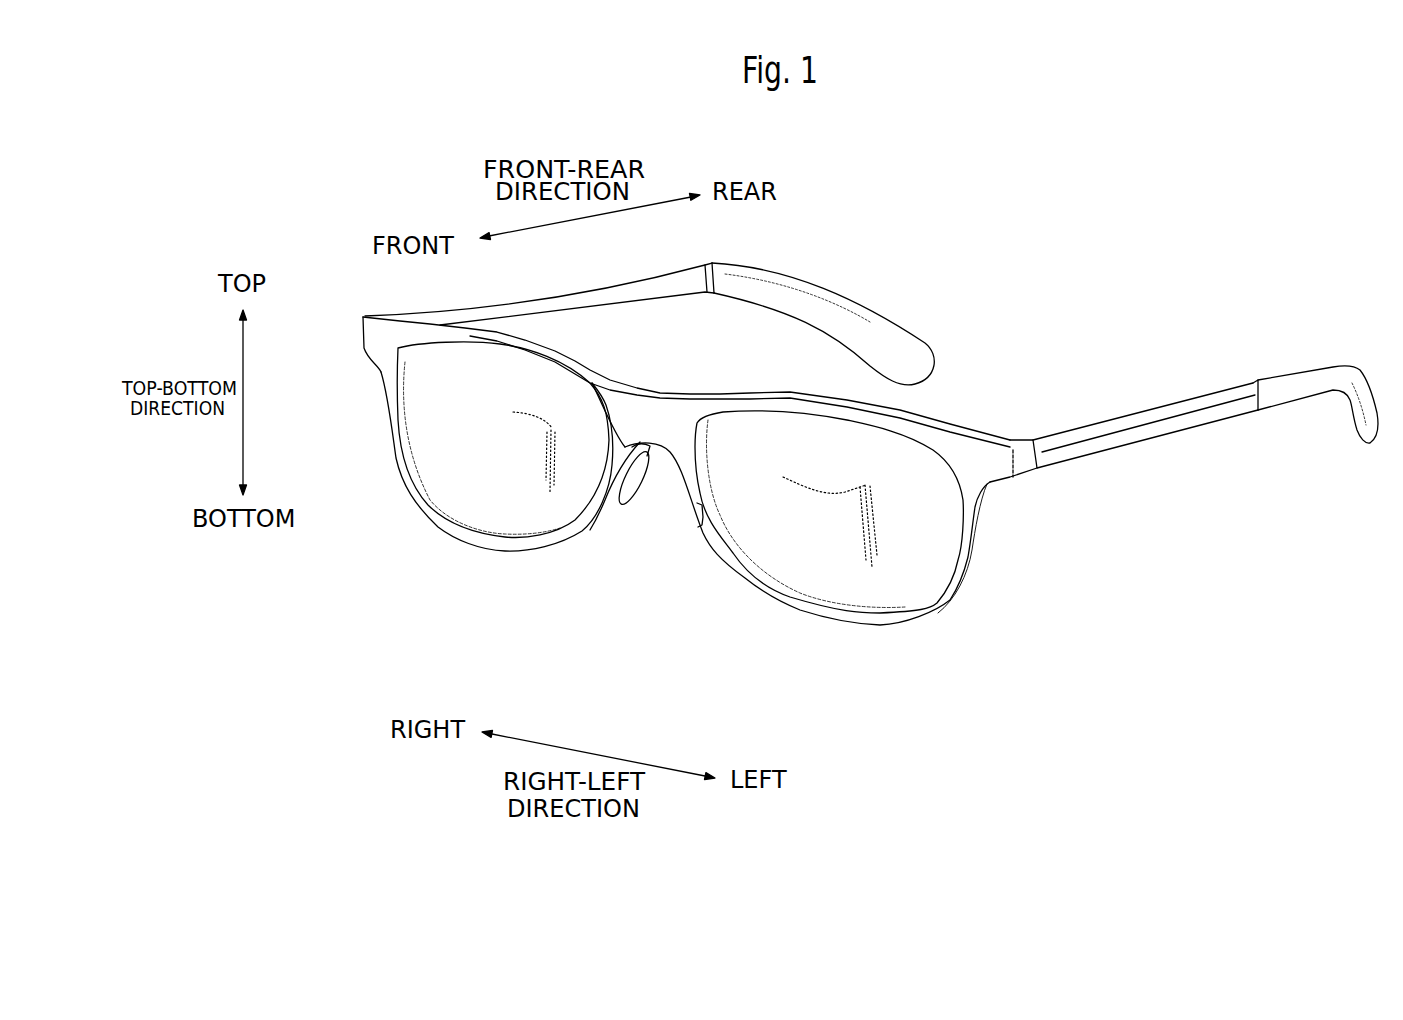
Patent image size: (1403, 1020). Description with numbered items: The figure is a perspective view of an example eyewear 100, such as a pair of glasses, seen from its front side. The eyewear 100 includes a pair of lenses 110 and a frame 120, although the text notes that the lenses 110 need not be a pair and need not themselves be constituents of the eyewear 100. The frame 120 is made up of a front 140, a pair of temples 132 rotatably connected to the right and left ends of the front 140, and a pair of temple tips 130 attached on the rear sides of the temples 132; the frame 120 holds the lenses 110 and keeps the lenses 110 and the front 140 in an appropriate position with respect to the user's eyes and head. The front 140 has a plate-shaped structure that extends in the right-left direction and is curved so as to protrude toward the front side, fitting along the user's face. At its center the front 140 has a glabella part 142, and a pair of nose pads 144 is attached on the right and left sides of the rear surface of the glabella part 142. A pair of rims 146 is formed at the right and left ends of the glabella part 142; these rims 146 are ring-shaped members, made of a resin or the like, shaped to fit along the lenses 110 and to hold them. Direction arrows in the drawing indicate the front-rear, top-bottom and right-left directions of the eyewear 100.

The eyewear 100 is at (1068, 277).
The lenses 110 is at (843, 593).
The frame 120 is at (1342, 704).
The temple tips 130 is at (1367, 450).
The temples 132 is at (1150, 457).
The front 140 is at (985, 573).
The glabella part 142 is at (652, 422).
The nose pads 144 is at (632, 505).
The rims 146 is at (735, 567).